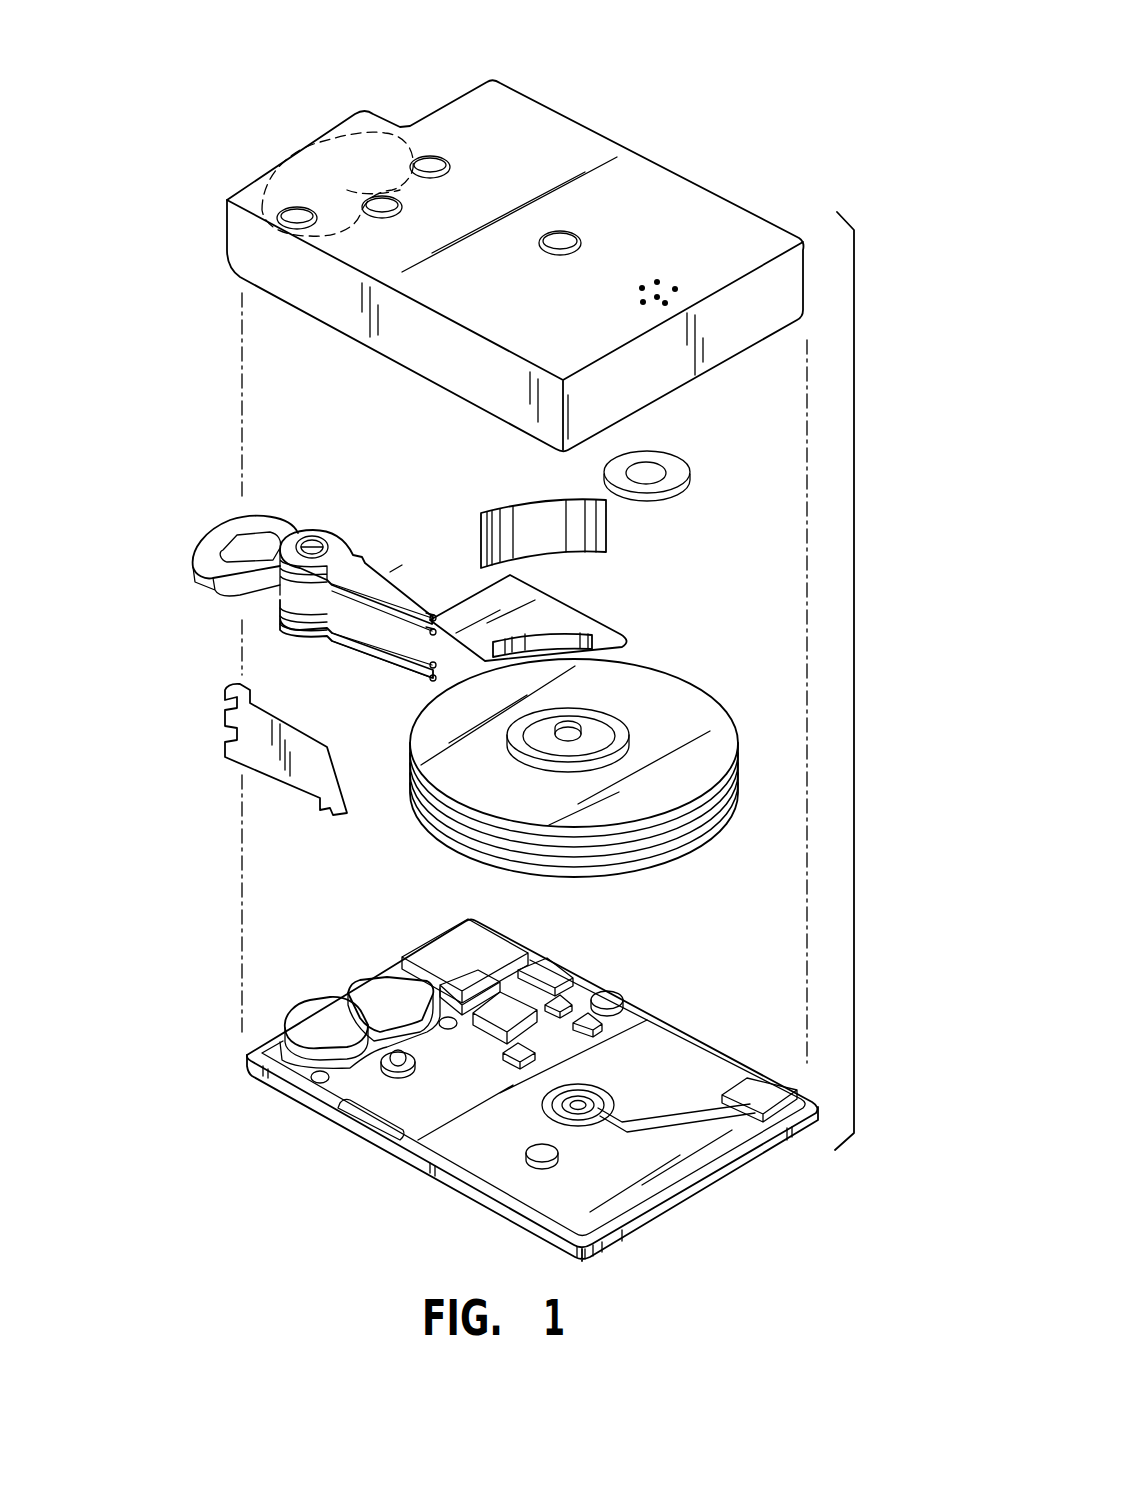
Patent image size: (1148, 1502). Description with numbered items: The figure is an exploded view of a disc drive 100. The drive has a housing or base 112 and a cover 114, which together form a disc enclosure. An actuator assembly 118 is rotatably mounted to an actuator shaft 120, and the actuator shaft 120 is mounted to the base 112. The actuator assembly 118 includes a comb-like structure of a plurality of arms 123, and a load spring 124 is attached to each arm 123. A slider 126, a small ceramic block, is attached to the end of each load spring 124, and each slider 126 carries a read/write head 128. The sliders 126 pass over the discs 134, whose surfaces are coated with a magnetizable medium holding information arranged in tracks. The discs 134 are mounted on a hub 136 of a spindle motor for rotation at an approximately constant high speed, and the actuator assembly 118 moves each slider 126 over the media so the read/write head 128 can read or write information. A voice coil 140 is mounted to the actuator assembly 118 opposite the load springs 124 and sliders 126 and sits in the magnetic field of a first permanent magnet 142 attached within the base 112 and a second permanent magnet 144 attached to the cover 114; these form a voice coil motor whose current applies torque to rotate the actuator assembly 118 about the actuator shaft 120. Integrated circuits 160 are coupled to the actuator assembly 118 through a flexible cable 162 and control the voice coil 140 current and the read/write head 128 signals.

The disc drive 100 is at (693, 95).
The base 112 is at (706, 1060).
The cover 114 is at (682, 200).
The actuator assembly 118 is at (282, 592).
The actuator shaft 120 is at (314, 538).
The arm 123 is at (338, 540).
The load spring 124 is at (385, 583).
The slider 126 is at (431, 618).
The read/write head 128 is at (450, 622).
The disc 134 is at (701, 710).
The hub 136 is at (578, 724).
The voice coil 140 is at (215, 543).
The first permanent magnet 142 is at (311, 1017).
The second permanent magnet 144 is at (337, 145).
The integrated circuits 160 is at (497, 1008).
The flexible cable 162 is at (243, 753).